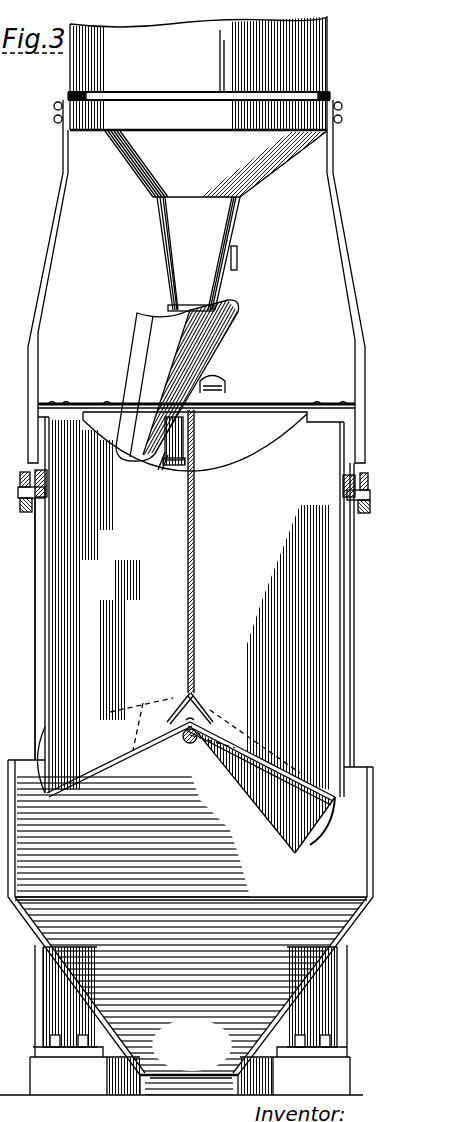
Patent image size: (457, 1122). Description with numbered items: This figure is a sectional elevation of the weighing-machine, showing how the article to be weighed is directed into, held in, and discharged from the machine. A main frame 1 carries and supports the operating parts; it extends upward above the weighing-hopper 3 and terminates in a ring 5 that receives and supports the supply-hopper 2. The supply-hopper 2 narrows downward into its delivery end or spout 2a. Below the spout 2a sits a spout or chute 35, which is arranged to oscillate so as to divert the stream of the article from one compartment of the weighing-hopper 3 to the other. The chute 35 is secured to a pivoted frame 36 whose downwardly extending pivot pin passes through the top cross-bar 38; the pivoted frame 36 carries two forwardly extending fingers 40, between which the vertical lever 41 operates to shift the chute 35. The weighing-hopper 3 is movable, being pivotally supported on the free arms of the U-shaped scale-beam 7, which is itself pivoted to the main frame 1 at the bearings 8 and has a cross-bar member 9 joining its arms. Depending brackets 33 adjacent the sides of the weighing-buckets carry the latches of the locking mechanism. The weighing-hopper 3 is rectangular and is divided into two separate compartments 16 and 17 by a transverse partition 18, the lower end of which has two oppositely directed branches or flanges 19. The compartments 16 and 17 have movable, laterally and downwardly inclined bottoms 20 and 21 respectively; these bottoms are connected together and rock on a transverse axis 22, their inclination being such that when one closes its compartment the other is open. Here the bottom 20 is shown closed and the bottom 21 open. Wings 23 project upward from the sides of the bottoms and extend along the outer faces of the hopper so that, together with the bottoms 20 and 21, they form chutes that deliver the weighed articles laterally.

The main frame 1 is at (335, 999).
The supply-hopper 2 is at (199, 58).
The spout 2a is at (218, 241).
The weighing-hopper 3 is at (344, 636).
The ring 5 is at (198, 115).
The scale-beam 7 is at (22, 512).
The bearings 8 is at (18, 493).
The cross-bar member 9 is at (191, 1042).
The compartment 16 is at (89, 605).
The compartment 17 is at (294, 609).
The transverse partition 18 is at (196, 578).
The flanges 19 is at (171, 713).
The bottom 20 is at (187, 735).
The bottom 21 is at (270, 827).
The transverse axis 22 is at (188, 744).
The wings 23 is at (319, 837).
The brackets 33 is at (20, 629).
The chute 35 is at (177, 380).
The pivoted frame 36 is at (183, 440).
The top cross-bar 38 is at (278, 402).
The fingers 40 is at (173, 465).
The vertical lever 41 is at (162, 470).